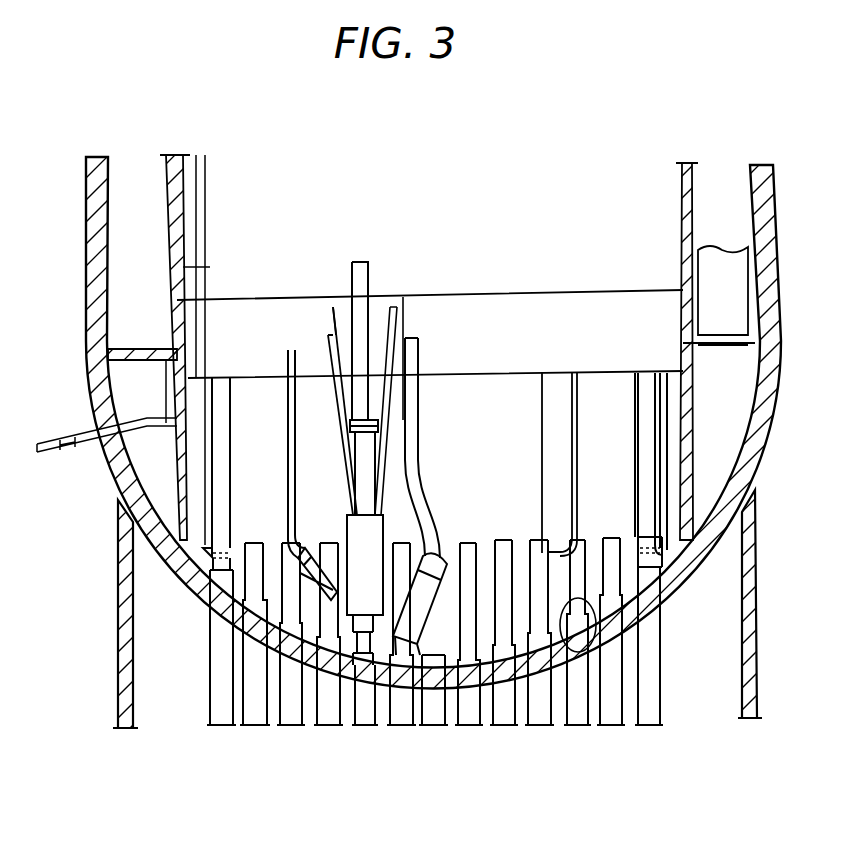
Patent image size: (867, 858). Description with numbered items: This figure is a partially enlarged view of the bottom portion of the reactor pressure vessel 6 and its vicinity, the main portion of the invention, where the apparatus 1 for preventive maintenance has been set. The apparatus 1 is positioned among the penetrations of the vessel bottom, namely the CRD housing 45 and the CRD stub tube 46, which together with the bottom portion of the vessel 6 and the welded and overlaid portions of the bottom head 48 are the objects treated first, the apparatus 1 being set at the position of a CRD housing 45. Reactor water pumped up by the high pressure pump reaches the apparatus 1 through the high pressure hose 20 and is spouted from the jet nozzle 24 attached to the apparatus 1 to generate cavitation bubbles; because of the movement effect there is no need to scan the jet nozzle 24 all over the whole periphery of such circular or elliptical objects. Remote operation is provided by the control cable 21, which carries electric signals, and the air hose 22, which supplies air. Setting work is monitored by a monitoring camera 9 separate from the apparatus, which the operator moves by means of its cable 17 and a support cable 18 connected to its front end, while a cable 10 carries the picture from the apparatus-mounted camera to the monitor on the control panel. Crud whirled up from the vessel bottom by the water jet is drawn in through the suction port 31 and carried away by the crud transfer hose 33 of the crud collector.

The apparatus for preventive maintenance 1 is at (366, 277).
The reactor pressure vessel 6 is at (745, 508).
The monitoring camera 9 is at (318, 655).
The cable 10 is at (404, 322).
The cable 17 is at (287, 362).
The support cable 18 is at (328, 348).
The high pressure hose 20 is at (391, 316).
The control cable 21 is at (352, 300).
The air hose 22 is at (346, 246).
The jet nozzle 24 is at (368, 668).
The suction port 31 is at (432, 660).
The crud transfer hose 33 is at (420, 357).
The CRD housing 45 is at (535, 543).
The CRD stub tube 46 is at (527, 640).
The bottom head 48 is at (578, 652).